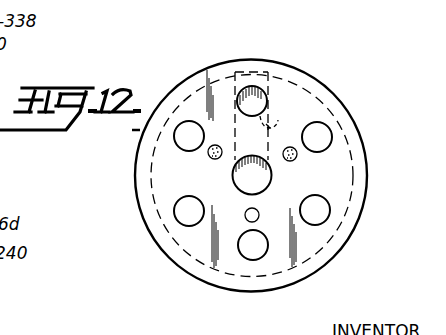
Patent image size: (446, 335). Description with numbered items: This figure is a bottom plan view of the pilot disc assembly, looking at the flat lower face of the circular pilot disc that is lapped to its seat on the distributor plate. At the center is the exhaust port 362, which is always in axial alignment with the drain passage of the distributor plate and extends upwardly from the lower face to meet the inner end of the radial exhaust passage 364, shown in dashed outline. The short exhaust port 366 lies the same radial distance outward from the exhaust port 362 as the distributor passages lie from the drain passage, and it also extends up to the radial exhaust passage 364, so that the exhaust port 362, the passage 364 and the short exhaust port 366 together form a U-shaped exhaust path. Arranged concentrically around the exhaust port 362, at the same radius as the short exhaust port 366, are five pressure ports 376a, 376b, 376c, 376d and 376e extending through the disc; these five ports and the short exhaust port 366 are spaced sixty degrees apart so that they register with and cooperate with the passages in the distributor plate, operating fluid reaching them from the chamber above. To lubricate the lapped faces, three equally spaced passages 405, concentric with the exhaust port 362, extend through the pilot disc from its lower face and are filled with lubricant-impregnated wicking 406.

The exhaust port 362 is at (271, 174).
The radial exhaust passage 364 is at (270, 116).
The short exhaust port 366 is at (249, 85).
The pressure port 376a is at (183, 129).
The pressure port 376b is at (178, 213).
The pressure port 376c is at (246, 254).
The pressure port 376d is at (326, 213).
The pressure port 376e is at (325, 133).
The lubricating passage 405 is at (209, 156).
The lubricant-impregnated wicking 406 is at (246, 211).